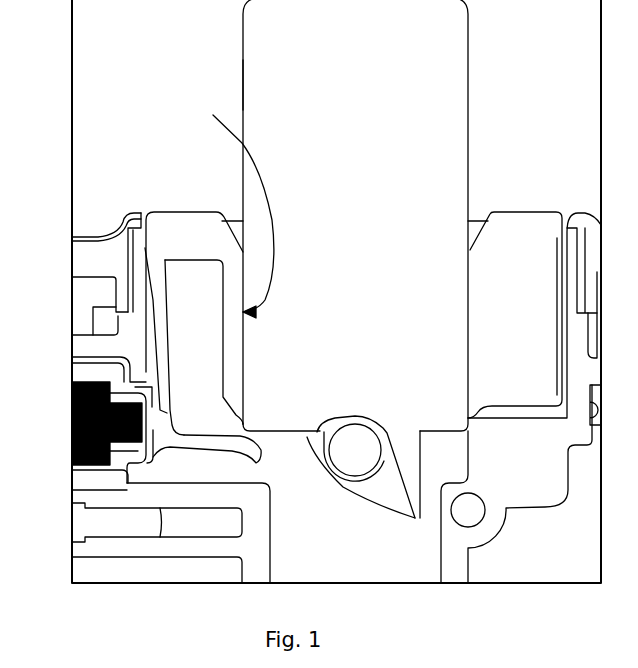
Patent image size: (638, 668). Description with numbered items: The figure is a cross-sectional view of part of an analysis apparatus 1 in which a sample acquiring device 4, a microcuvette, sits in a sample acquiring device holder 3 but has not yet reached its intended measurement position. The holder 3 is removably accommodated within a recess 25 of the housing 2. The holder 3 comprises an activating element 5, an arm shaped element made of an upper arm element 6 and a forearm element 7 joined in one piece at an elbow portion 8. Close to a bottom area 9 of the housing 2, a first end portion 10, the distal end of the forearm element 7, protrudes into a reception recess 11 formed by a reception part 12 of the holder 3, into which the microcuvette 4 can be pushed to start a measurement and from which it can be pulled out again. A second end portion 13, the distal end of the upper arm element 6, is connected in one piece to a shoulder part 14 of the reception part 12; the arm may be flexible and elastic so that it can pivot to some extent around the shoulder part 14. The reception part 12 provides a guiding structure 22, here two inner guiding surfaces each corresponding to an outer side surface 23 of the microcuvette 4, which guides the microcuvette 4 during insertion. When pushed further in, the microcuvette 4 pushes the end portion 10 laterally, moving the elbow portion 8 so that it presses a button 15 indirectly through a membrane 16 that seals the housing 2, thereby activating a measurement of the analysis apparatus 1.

The analysis apparatus 1 is at (157, 98).
The housing 2 is at (546, 490).
The sample acquiring device holder 3 is at (502, 195).
The sample acquiring device 4 is at (428, 62).
The activating element 5 is at (168, 318).
The upper arm element 6 is at (160, 368).
The forearm element 7 is at (203, 445).
The elbow portion 8 is at (160, 410).
The bottom area 9 is at (347, 563).
The first end portion 10 is at (267, 463).
The reception recess 11 is at (283, 435).
The reception part 12 is at (535, 237).
The second end portion 13 is at (153, 263).
The shoulder part 14 is at (185, 228).
The button 15 is at (72, 428).
The membrane 16 is at (85, 480).
The guiding structure 22 is at (227, 209).
The outer side surface 23 is at (242, 82).
The recess 25 is at (148, 295).